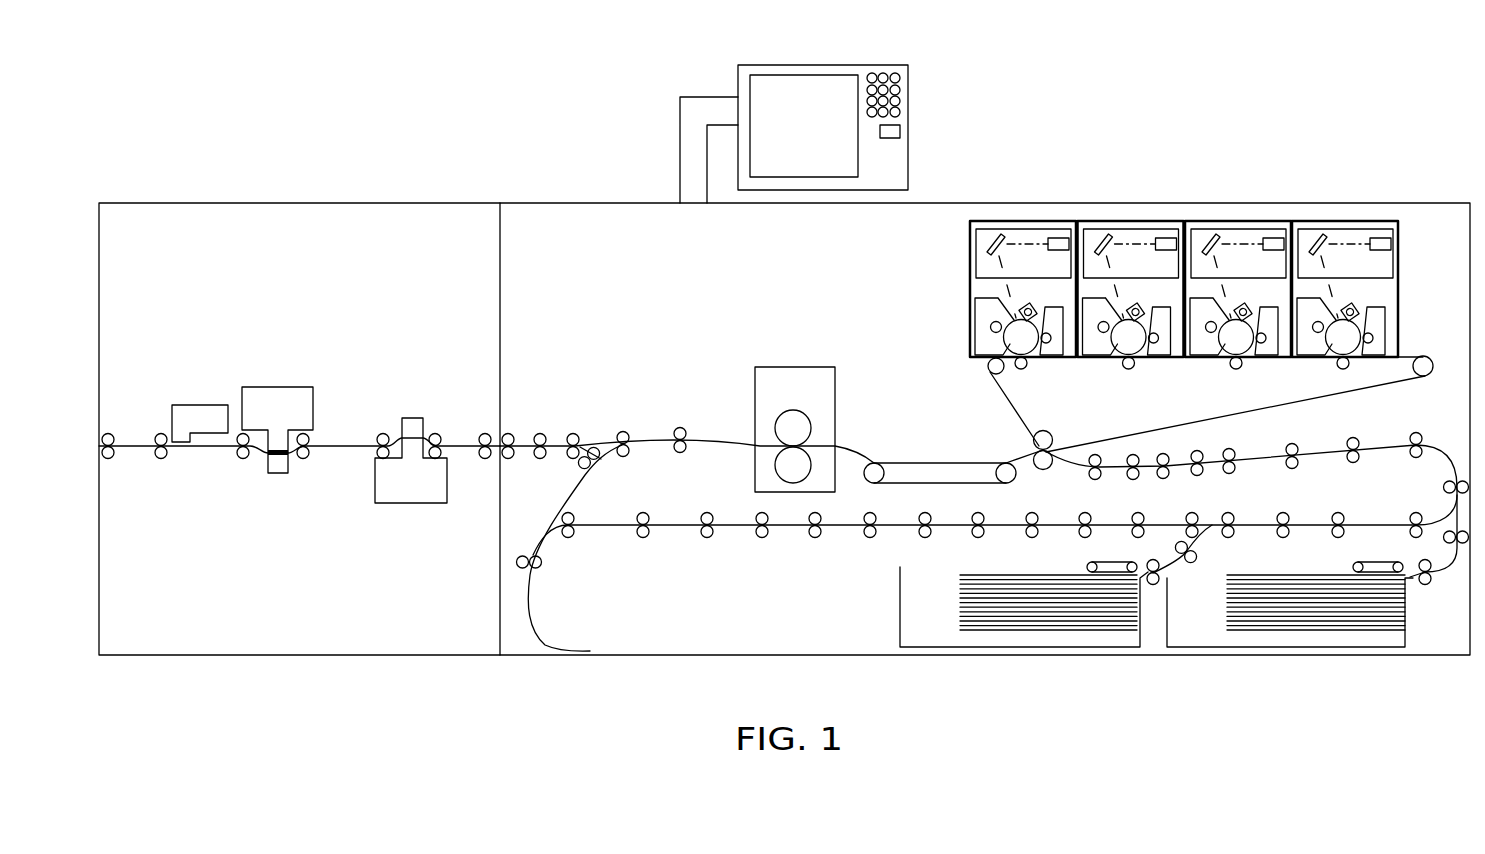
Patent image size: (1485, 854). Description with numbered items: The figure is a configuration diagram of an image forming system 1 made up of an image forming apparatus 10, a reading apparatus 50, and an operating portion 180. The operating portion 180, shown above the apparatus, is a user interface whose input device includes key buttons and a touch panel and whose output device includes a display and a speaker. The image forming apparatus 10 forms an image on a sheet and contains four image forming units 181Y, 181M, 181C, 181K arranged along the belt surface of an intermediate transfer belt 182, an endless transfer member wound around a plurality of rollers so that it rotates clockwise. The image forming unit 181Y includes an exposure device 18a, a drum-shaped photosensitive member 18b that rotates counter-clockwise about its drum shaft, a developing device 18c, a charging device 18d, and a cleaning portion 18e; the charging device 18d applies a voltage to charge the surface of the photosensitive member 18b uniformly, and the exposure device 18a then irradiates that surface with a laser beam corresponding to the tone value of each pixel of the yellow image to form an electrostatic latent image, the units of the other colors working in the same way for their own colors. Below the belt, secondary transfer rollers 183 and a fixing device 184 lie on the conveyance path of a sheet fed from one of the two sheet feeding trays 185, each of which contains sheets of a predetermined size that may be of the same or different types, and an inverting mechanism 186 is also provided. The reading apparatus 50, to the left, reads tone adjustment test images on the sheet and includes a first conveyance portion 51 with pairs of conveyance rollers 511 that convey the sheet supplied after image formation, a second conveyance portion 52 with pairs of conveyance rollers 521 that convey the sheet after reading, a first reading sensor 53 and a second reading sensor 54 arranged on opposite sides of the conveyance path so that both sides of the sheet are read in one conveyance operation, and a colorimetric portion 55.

The image forming system 1 is at (1112, 100).
The image forming apparatus 10 is at (1428, 205).
The reading apparatus 50 is at (355, 203).
The first conveyance portion 51 is at (427, 338).
The second conveyance portion 52 is at (280, 338).
The first reading sensor 53 is at (400, 504).
The second reading sensor 54 is at (314, 400).
The colorimetric portion 55 is at (200, 404).
The pairs of conveyance rollers 511 is at (485, 432).
The pairs of conveyance rollers 521 is at (312, 492).
The operating portion 180 is at (910, 103).
The image forming unit 181Y is at (1032, 218).
The image forming unit 181M is at (1142, 218).
The image forming unit 181C is at (1253, 218).
The image forming unit 181K is at (1370, 218).
The exposure device 18a is at (972, 245).
The photosensitive member 18b is at (1037, 357).
The developing device 18c is at (978, 335).
The charging device 18d is at (1018, 306).
The cleaning portion 18e is at (1063, 356).
The intermediate transfer belt 182 is at (1365, 388).
The secondary transfer rollers 183 is at (1048, 468).
The fixing device 184 is at (797, 366).
The sheet feeding trays 185 is at (900, 622).
The inverting mechanism 186 is at (535, 625).